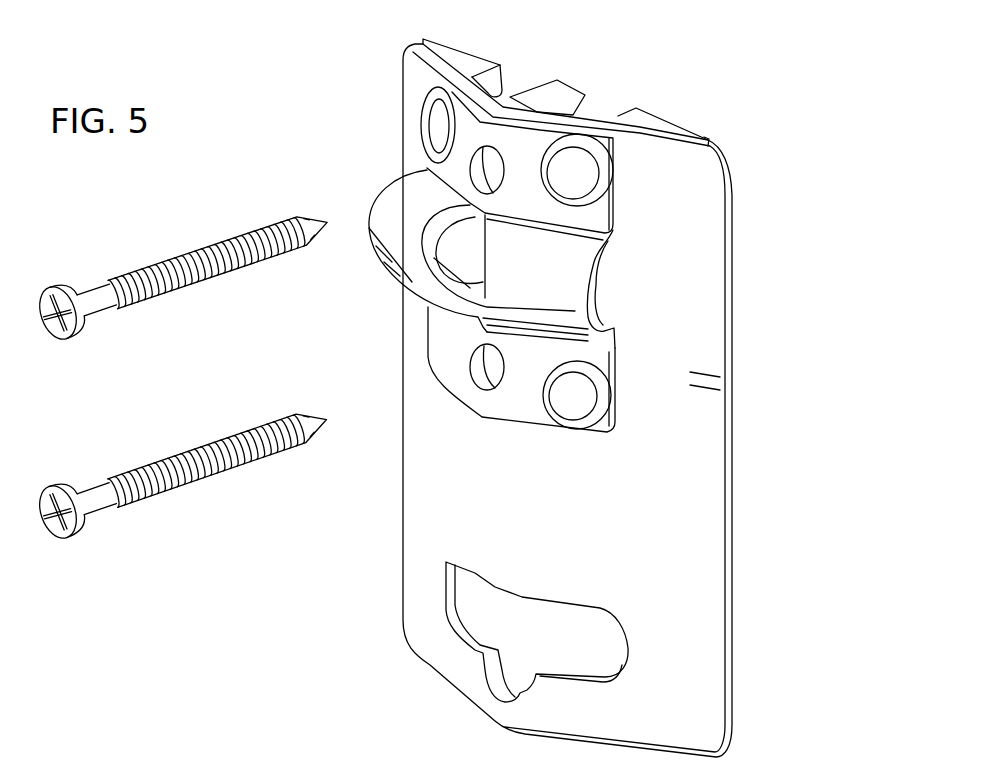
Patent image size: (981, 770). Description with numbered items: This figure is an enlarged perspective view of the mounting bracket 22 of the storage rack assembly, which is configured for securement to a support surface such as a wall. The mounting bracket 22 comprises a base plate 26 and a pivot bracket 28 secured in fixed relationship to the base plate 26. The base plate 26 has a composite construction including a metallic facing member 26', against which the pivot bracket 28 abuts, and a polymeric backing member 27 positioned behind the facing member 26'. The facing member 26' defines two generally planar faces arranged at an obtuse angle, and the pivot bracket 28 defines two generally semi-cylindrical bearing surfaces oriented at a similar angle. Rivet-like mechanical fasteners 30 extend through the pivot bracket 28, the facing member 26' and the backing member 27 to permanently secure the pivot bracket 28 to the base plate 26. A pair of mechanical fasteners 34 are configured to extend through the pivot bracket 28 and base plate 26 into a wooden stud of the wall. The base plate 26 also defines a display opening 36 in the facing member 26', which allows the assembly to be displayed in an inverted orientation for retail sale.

The mounting bracket 22 is at (729, 82).
The base plate 26 is at (609, 400).
The facing member 26' is at (749, 352).
The backing member 27 is at (565, 95).
The pivot bracket 28 is at (570, 264).
The mechanical fasteners 30 is at (433, 122).
The mechanical fasteners 34 is at (182, 295).
The display opening 36 is at (527, 606).